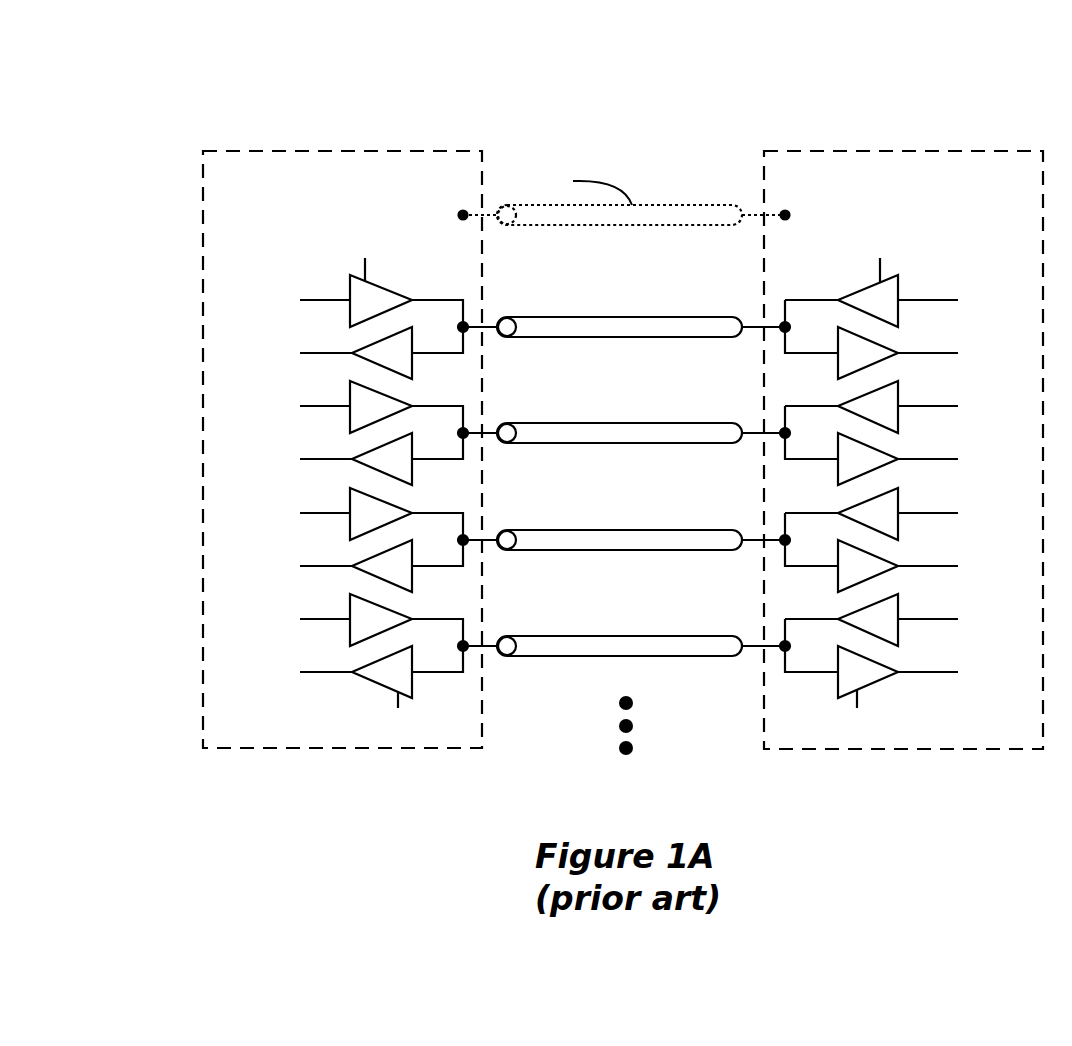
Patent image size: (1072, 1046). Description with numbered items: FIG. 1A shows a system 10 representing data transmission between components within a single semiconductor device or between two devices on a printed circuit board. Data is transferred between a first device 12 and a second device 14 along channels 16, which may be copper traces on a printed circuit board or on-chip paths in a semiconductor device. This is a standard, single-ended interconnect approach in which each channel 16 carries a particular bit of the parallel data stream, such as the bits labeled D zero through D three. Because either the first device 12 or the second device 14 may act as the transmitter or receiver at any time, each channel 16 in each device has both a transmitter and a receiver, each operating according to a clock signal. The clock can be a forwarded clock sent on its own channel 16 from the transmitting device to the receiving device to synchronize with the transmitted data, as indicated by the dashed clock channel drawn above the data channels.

The system 10 is at (116, 64).
The first device 12 is at (362, 150).
The second device 14 is at (925, 150).
The channels 16 is at (612, 133).